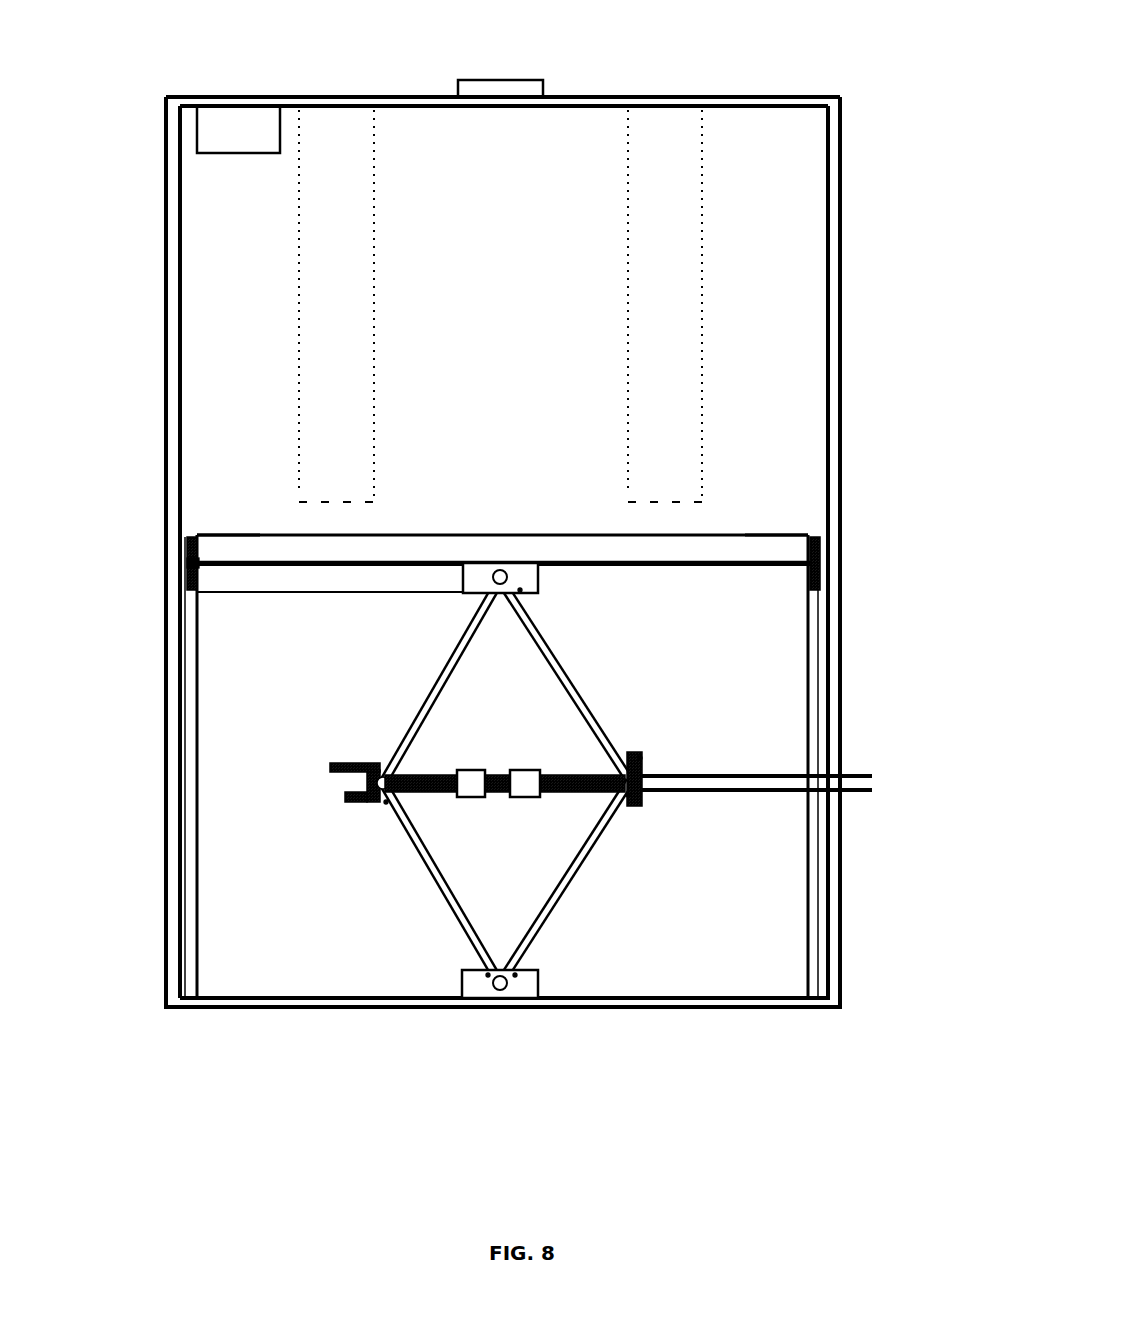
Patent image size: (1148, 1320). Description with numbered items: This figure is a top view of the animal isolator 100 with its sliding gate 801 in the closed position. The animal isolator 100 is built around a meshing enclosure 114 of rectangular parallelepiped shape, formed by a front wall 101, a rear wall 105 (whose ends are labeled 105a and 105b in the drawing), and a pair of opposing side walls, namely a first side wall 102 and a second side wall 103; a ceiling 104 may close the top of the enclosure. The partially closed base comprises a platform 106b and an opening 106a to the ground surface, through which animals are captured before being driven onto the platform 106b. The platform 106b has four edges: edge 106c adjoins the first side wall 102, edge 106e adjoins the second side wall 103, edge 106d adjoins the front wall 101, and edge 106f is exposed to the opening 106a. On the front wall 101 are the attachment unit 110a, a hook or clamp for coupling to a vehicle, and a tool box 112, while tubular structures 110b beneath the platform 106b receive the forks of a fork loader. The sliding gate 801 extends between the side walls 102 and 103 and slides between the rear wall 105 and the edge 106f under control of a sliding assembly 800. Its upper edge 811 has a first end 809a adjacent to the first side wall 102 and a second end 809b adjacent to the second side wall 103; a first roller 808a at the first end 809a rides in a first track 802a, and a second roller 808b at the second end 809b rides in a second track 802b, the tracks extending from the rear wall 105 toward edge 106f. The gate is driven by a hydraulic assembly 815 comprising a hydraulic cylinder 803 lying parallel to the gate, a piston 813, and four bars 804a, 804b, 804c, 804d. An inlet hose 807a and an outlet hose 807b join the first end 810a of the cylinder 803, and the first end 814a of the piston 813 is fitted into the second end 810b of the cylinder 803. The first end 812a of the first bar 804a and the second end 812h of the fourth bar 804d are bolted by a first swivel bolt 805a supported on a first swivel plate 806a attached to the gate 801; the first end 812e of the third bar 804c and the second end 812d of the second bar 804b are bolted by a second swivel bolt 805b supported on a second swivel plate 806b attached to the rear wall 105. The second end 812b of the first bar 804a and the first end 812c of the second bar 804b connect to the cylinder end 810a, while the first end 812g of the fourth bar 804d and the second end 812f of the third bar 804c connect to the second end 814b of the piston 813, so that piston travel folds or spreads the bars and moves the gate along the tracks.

The animal isolator 100 is at (543, 36).
The front wall 101 is at (740, 94).
The first side wall 102 is at (842, 293).
The second side wall 103 is at (164, 277).
The ceiling 104 is at (800, 292).
The rear wall 105 is at (478, 1010).
The bottom right corner 105a is at (842, 1010).
The bottom left corner 105b is at (170, 1008).
The opening to a ground surface 106a is at (232, 932).
The platform 106b is at (752, 350).
The edge of the platform 106c is at (826, 183).
The edge of the platform 106d is at (515, 108).
The edge of the platform 106e is at (183, 218).
The edge of the platform 106f is at (460, 533).
The attachment unit 110a is at (458, 75).
The tubular structures 110b is at (335, 140).
The tool box 112 is at (215, 133).
The meshing enclosure 114 is at (195, 1082).
The sliding assembly 800 is at (535, 487).
The sliding gate 801 is at (767, 545).
The first track 802a is at (810, 718).
The second track 802b is at (196, 724).
The hydraulic cylinder 803 is at (555, 785).
The first bar 804a is at (562, 648).
The second bar 804b is at (595, 845).
The third bar 804c is at (396, 818).
The fourth bar 804d is at (410, 715).
The first swivel bolt 805a is at (512, 577).
The second swivel bolt 805b is at (501, 992).
The first swivel plate 806a is at (193, 564).
The second swivel plate 806b is at (482, 977).
The inlet hose 807a is at (745, 790).
The outlet hose 807b is at (705, 790).
The first roller 808a is at (816, 553).
The second roller 808b is at (192, 552).
The first end of the upper edge 809a is at (792, 535).
The second end of the upper edge 809b is at (200, 538).
The first end of the hydraulic cylinder 810a is at (640, 797).
The second end of the hydraulic cylinder 810b is at (376, 800).
The upper edge of the sliding gate 811 is at (570, 558).
The first end of the first bar 812a is at (522, 596).
The second end of the first bar 812b is at (642, 758).
The first end of the second bar 812c is at (627, 795).
The second end of the second bar 812d is at (517, 976).
The first end of the third bar 812e is at (488, 975).
The second end of the third bar 812f is at (386, 802).
The first end of the fourth bar 812g is at (376, 798).
The second end of the fourth bar 812h is at (468, 576).
The piston 813 is at (372, 772).
The first end of the piston 814a is at (497, 792).
The second end of the piston 814b is at (470, 790).
The hydraulic assembly 815 is at (504, 848).